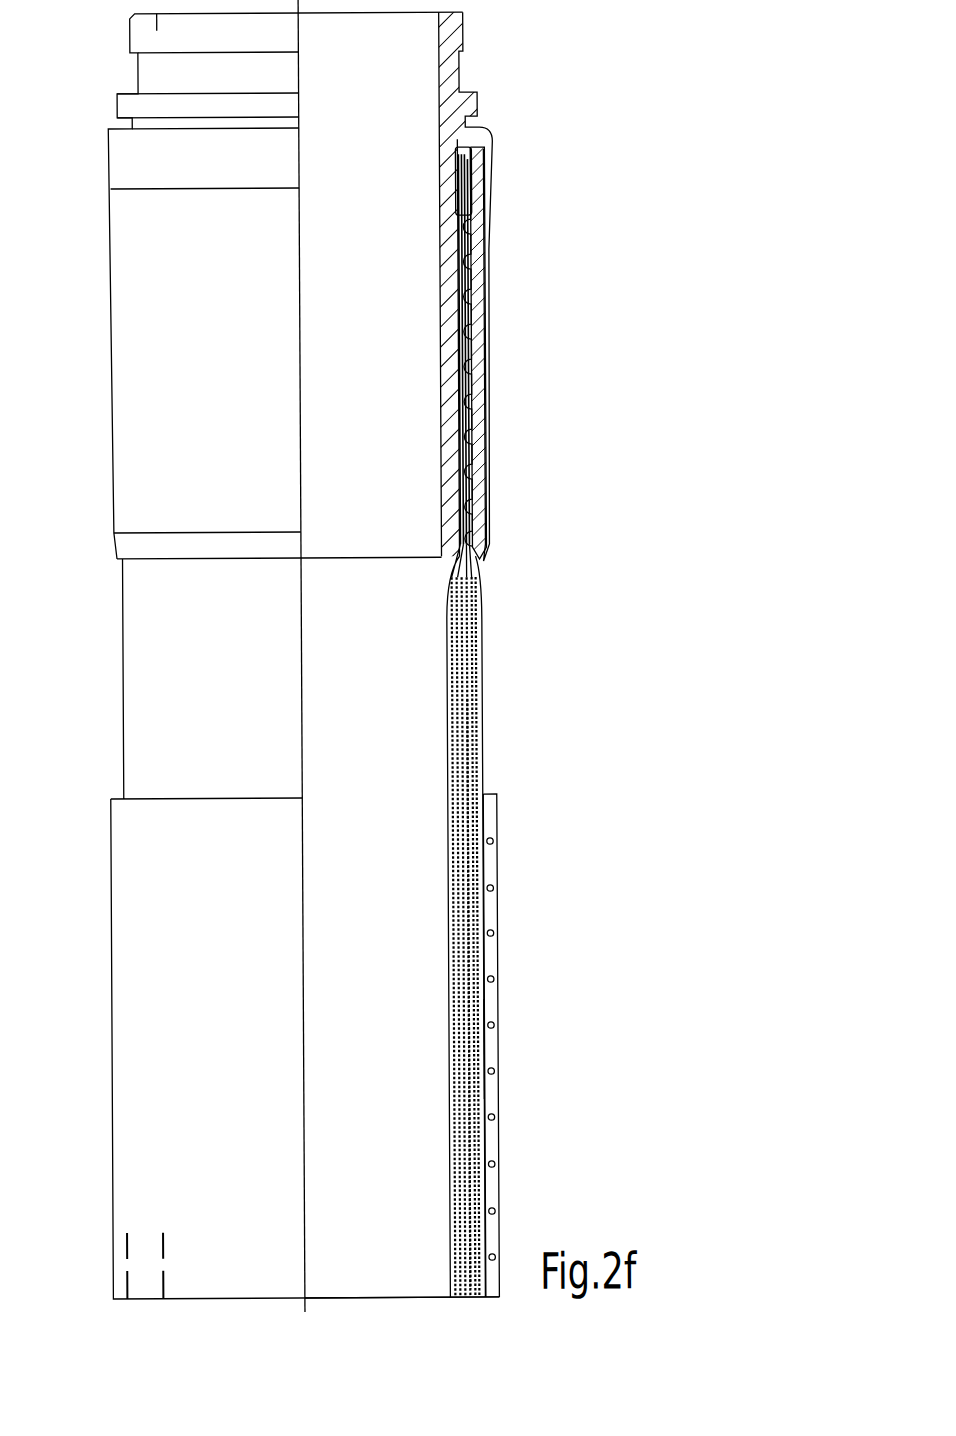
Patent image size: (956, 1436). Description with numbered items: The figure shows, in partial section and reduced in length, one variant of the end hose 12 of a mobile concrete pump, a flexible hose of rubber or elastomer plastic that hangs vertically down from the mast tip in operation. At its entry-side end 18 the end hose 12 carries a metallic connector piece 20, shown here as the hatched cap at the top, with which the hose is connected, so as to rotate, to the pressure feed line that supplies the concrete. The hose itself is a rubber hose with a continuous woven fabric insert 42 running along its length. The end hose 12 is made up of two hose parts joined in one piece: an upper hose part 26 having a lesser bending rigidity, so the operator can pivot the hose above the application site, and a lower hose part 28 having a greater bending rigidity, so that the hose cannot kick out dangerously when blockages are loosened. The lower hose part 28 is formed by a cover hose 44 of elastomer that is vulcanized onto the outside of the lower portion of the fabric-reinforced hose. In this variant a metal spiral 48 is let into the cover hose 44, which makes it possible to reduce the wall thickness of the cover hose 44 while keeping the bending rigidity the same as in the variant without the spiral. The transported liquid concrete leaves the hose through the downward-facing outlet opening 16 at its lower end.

The metallic connector piece 20 is at (143, 377).
The end hose 12 is at (155, 702).
The entry-side end 18 is at (487, 392).
The upper hose part 26 is at (487, 655).
The woven fabric insert 42 is at (468, 713).
The cover hose 44 is at (490, 818).
The metal spiral 48 is at (492, 934).
The lower hose part 28 is at (494, 1056).
The outlet opening 16 is at (340, 1299).